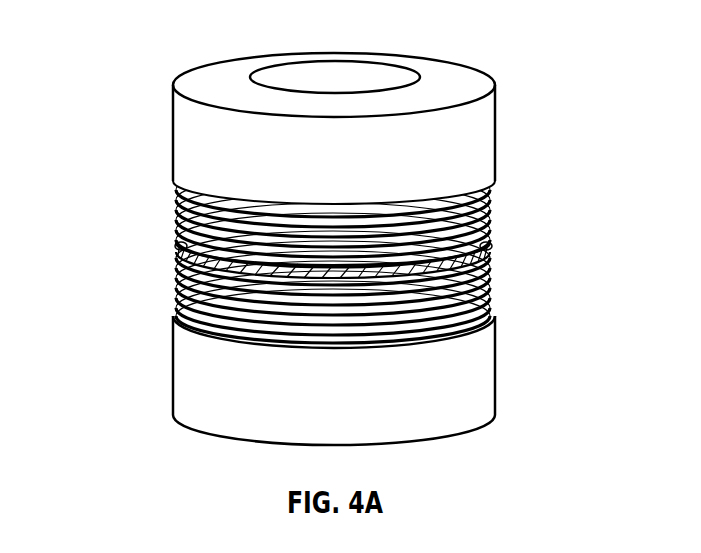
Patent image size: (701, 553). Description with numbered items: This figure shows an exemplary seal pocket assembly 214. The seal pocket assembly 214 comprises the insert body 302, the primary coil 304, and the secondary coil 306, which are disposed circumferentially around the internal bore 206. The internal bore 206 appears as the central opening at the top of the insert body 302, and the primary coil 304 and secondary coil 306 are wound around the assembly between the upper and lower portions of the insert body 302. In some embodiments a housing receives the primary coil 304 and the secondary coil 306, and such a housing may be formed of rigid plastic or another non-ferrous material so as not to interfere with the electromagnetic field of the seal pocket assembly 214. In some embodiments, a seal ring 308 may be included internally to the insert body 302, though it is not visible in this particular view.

The seal pocket assembly 214 is at (110, 56).
The internal bore 206 is at (340, 53).
The insert body 302 is at (497, 124).
The primary coil 304 is at (176, 212).
The secondary coil 306 is at (176, 292).
The seal ring 308 is at (489, 252).